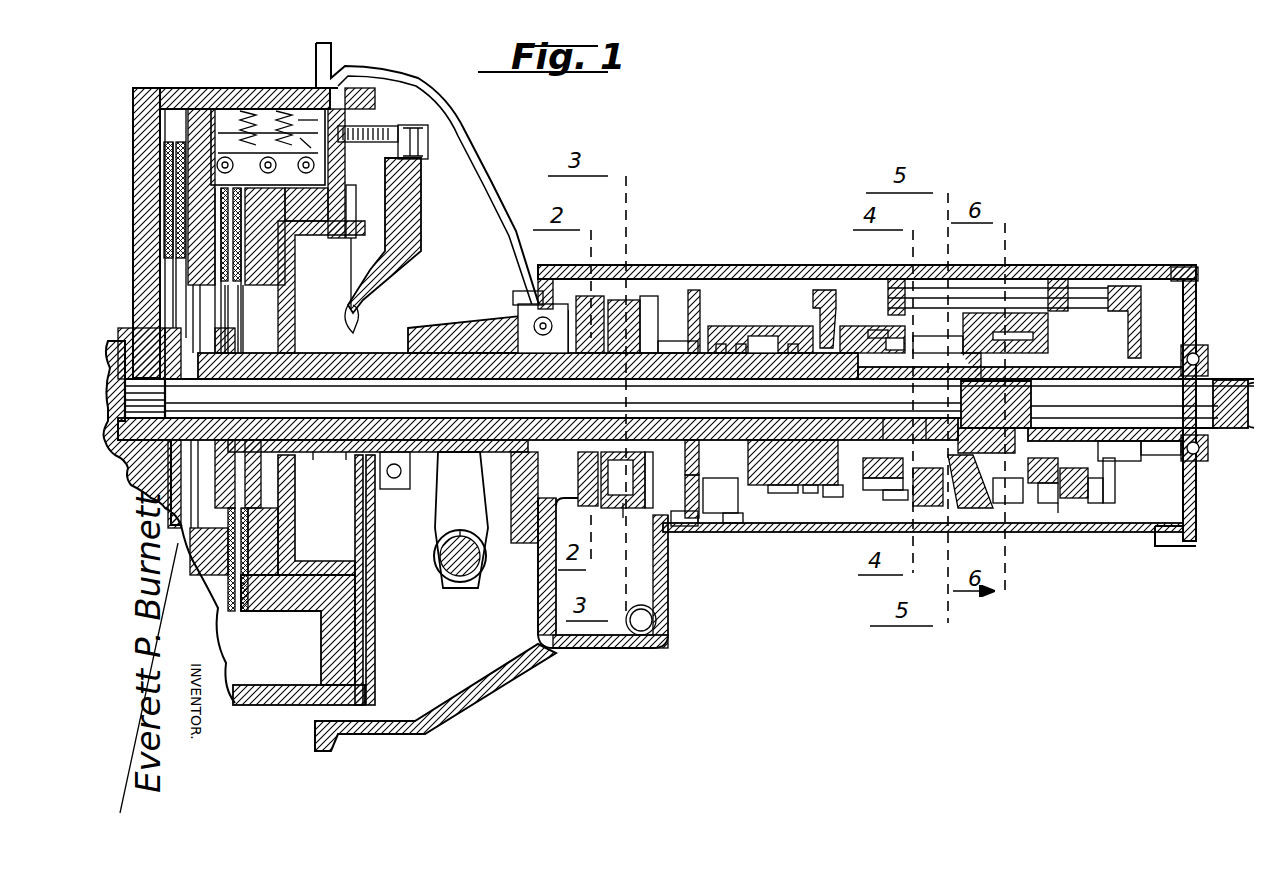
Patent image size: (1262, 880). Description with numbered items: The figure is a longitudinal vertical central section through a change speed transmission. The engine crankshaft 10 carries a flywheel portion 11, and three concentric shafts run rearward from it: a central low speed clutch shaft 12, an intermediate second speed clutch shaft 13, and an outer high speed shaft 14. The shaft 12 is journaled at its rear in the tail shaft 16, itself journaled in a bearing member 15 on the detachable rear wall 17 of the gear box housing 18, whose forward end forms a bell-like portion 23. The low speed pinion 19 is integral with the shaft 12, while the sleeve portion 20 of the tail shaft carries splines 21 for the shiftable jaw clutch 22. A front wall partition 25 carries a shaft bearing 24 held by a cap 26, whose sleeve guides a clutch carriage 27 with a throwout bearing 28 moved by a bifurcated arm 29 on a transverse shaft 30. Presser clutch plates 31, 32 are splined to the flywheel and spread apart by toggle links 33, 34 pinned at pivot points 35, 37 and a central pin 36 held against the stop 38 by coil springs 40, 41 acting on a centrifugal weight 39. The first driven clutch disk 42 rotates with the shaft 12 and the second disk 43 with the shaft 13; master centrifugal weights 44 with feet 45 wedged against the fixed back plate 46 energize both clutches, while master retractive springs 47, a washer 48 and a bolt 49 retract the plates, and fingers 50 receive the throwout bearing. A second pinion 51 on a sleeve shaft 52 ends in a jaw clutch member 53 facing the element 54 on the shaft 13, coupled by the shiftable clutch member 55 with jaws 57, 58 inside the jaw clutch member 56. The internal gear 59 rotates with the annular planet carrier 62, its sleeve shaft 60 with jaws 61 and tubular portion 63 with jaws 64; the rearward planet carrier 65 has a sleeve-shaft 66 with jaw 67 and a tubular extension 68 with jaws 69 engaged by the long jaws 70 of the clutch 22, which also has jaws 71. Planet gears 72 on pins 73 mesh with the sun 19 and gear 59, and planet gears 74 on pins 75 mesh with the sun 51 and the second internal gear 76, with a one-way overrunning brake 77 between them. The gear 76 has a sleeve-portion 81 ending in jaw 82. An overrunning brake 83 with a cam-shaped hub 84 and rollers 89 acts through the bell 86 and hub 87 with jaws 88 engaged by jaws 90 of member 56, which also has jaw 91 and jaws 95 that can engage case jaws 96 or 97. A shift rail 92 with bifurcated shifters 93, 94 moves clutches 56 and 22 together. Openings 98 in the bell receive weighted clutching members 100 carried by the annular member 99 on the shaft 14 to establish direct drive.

The engine crankshaft 10 is at (120, 333).
The flywheel portion 11 is at (150, 80).
The central low speed ratio clutch shaft 12 is at (689, 403).
The second speed ratio driving clutch shaft 13 is at (318, 445).
The high speed ratio driving shaft 14 is at (333, 445).
The bearing member 15 is at (1195, 441).
The tail shaft 16 is at (1240, 372).
The rear wall 17 is at (1190, 515).
The gear box housing 18 is at (1075, 524).
The low speed ratio driving pinion 19 is at (1023, 395).
The sleeve portion 20 is at (1158, 447).
The splines 21 is at (1175, 351).
The jaw clutch 22 is at (1128, 453).
The bell-like portion 23 is at (448, 712).
The shaft bearing 24 is at (455, 470).
The front wall partition 25 is at (532, 600).
The cap 26 is at (515, 330).
The clutch carriage 27 is at (448, 330).
The clutch throwout bearing 28 is at (398, 478).
The bifurcated arm 29 is at (474, 517).
The transverse shaft 30 is at (460, 568).
The presser clutch plate 31 is at (190, 272).
The presser clutch plate 32 is at (275, 258).
The toggle link 33 is at (232, 165).
The toggle link 34 is at (328, 178).
The pivot point 35 is at (217, 150).
The central pin 36 is at (290, 170).
The pivot point 37 is at (313, 134).
The base abutment stop 38 is at (262, 166).
The centrifugal weight 39 is at (312, 114).
The coil spring 40 is at (240, 103).
The coil spring 41 is at (280, 103).
The first driven clutch disk 42 is at (158, 195).
The second driven clutch disk 43 is at (240, 548).
The master centrifugal weights 44 is at (410, 200).
The feet portions 45 is at (342, 228).
The fixed back plate 46 is at (367, 630).
The master retractive springs 47 is at (370, 118).
The washer 48 is at (437, 115).
The bolt 49 is at (420, 135).
The fingers 50 is at (350, 318).
The second pinion gear 51 is at (922, 410).
The sleeve shaft 52 is at (880, 410).
The jaw clutch member 53 is at (765, 477).
The jaw clutch element 54 is at (720, 495).
The shiftable clutch member 55 is at (762, 320).
The jaw clutch member 56 is at (845, 495).
The internal clutch jaws 57 is at (714, 336).
The internal clutch jaws 58 is at (786, 336).
The internal gear 59 is at (1000, 495).
The sleeve shaft 60 is at (883, 466).
The external jaw clutch elements 61 is at (785, 485).
The annular planet carrier 62 is at (895, 482).
The tubular portion 63 is at (1088, 495).
The internal jaw clutch elements 64 is at (1105, 480).
The rearward annular planet carrier 65 is at (970, 500).
The sleeve-shaft portion 66 is at (832, 410).
The jaw clutch element 67 is at (735, 336).
The tubular extension 68 is at (1041, 472).
The internal jaw clutch elements 69 is at (1047, 497).
The jaw clutch elements 70 is at (1075, 483).
The jaw clutch elements 71 is at (1064, 515).
The planet gears 72 is at (1010, 325).
The pins 73 is at (1021, 342).
The planet gears 74 is at (883, 324).
The pins 75 is at (938, 341).
The second internal gear 76 is at (930, 498).
The one-way overrunning brake 77 is at (887, 340).
The sleeve-portion 81 is at (882, 480).
The jaw clutch element 82 is at (808, 482).
The overrunning one-way brake 83 is at (608, 495).
The cam-shaped hub 84 is at (575, 494).
The bell 86 is at (615, 525).
The hub 87 is at (677, 452).
The external jaw clutch elements 88 is at (681, 496).
The rollers 89 is at (582, 288).
The internal clutch jaws 90 is at (680, 345).
The jaw 91 is at (868, 318).
The shift rail 92 is at (1015, 290).
The bifurcated shifter 93 is at (820, 282).
The bifurcated shifter 94 is at (1130, 300).
The external jaw clutch portion 95 is at (692, 515).
The jaws 96 is at (672, 518).
The jaw 97 is at (728, 515).
The openings 98 is at (612, 292).
The annular member 99 is at (640, 500).
The weighted clutching members 100 is at (640, 300).